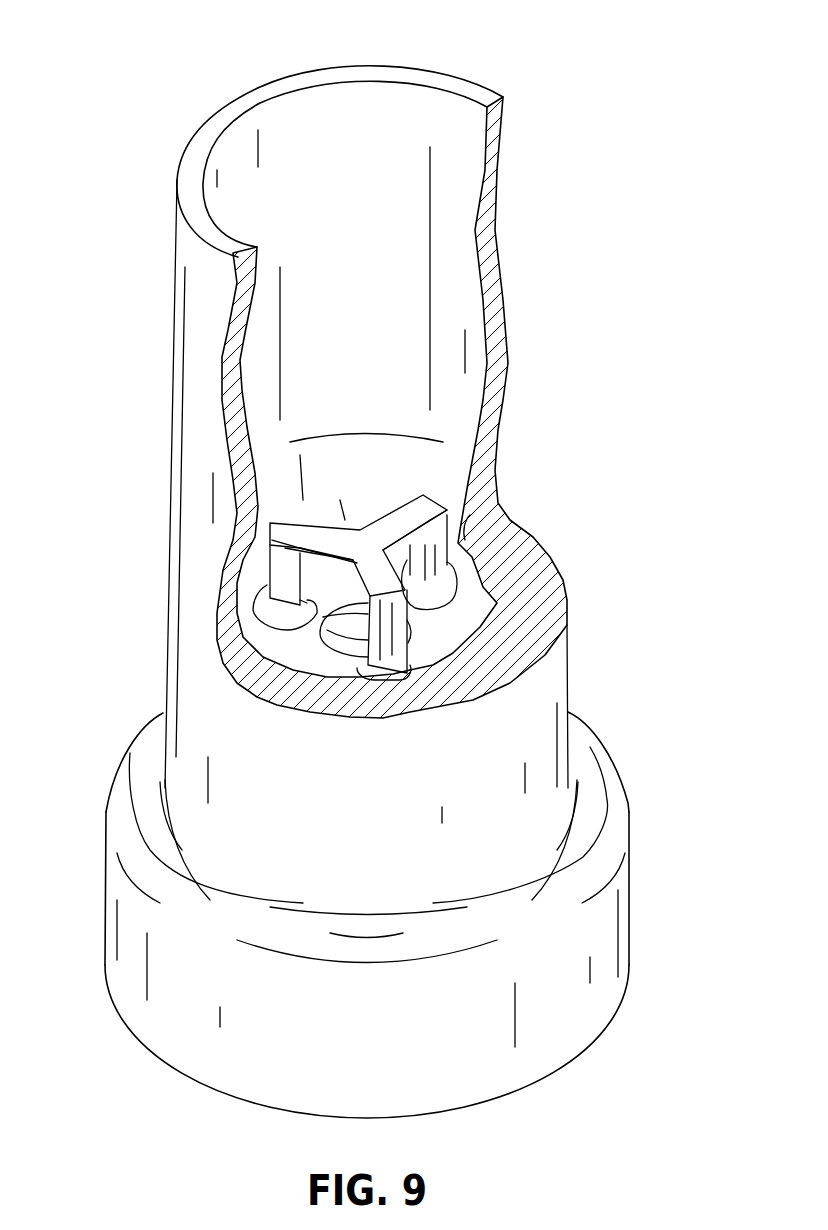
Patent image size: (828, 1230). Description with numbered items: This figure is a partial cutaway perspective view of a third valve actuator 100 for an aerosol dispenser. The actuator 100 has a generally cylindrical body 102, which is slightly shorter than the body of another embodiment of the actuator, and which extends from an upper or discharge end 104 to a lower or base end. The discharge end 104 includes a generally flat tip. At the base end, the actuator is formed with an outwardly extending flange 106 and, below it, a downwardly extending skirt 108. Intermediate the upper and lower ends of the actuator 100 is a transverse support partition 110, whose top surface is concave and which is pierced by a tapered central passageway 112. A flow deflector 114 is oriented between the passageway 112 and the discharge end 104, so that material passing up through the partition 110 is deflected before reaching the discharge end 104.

The actuator 100 is at (610, 268).
The generally cylindrical body 102 is at (188, 435).
The discharge end 104 is at (317, 113).
The outwardly extending flange 106 is at (142, 785).
The downwardly extending skirt 108 is at (172, 1025).
The transverse support partition 110 is at (467, 605).
The tapered central passageway 112 is at (330, 645).
The flow deflector 114 is at (410, 493).